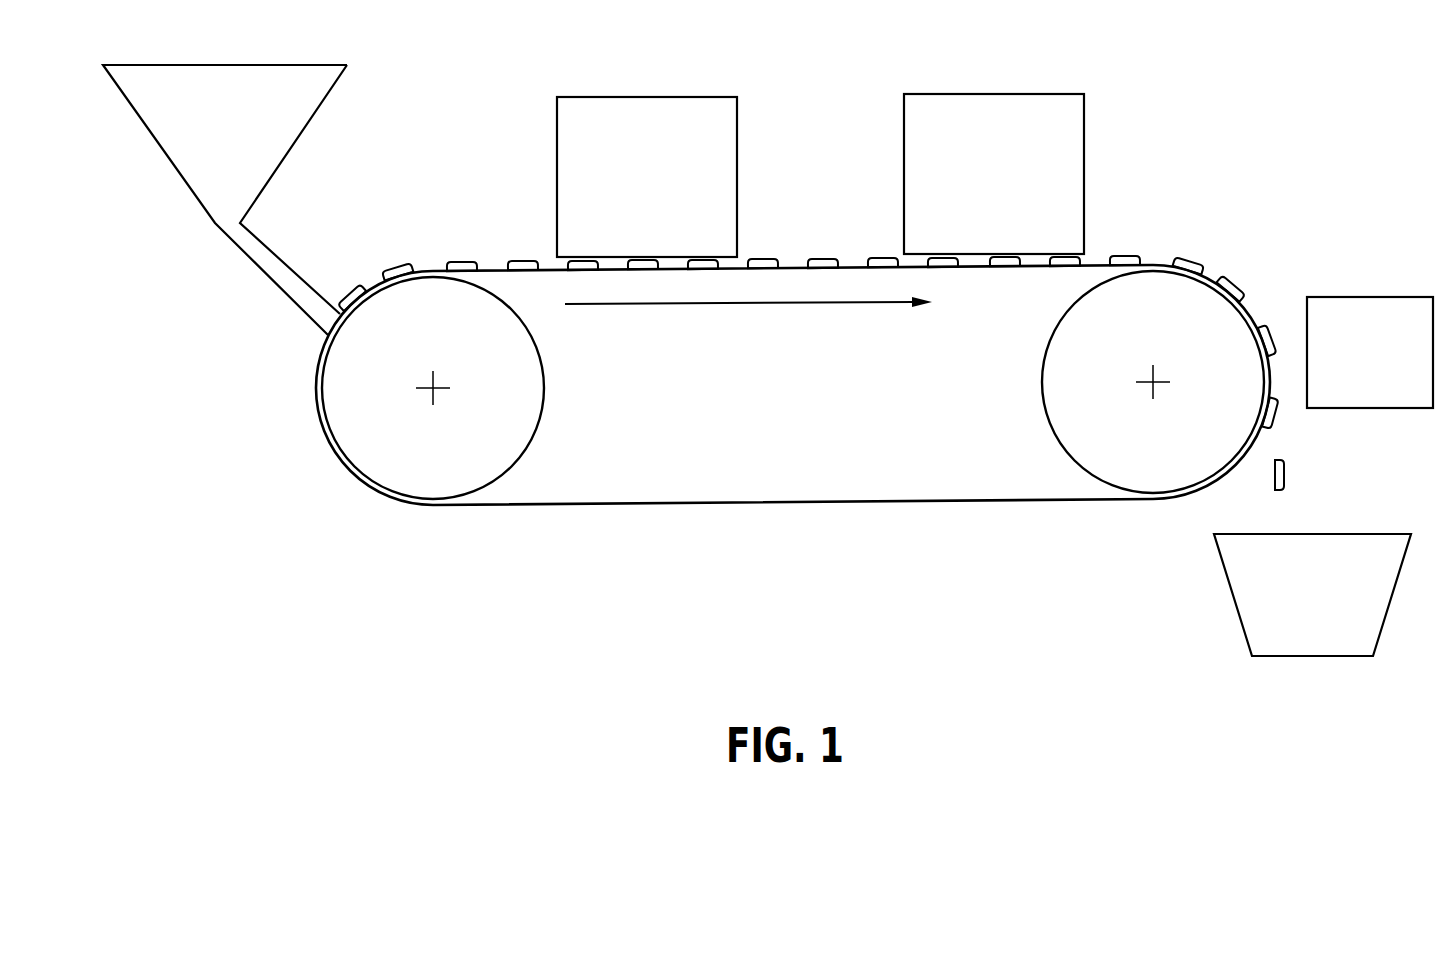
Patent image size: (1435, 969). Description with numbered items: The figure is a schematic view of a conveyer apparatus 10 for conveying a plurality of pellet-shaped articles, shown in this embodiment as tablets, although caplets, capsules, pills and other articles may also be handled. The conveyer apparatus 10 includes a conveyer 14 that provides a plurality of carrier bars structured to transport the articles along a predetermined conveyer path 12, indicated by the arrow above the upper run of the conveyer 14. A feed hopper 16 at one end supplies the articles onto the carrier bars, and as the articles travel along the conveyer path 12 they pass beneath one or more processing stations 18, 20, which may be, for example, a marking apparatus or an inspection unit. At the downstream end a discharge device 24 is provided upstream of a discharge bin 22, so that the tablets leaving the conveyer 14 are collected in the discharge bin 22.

The conveyer apparatus 10 is at (793, 450).
The conveyer path 12 is at (730, 304).
The conveyer 14 is at (757, 505).
The feed hopper 16 is at (221, 122).
The processing station 18 is at (706, 146).
The processing station 20 is at (1031, 140).
The discharge bin 22 is at (1334, 611).
The discharge device 24 is at (1388, 372).